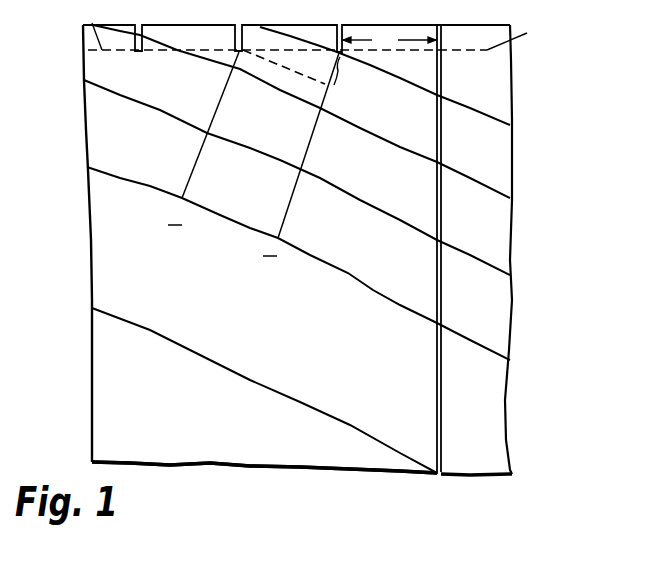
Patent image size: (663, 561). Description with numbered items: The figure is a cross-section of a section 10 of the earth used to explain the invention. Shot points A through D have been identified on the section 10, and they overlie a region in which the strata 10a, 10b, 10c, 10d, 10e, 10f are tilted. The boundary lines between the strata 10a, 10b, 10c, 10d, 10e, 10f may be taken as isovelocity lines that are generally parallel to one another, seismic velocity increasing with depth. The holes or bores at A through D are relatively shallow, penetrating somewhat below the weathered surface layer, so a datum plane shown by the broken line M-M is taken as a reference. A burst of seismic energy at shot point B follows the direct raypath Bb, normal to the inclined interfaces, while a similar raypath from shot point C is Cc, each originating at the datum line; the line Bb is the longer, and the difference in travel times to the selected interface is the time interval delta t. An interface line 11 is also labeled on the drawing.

The section of the earth 10 is at (200, 499).
The stratum 10a is at (520, 53).
The stratum 10b is at (520, 125).
The stratum 10c is at (77, 23).
The stratum 10d is at (77, 83).
The stratum 10e is at (77, 165).
The stratum 10f is at (77, 305).
The interface line between layers 11 is at (348, 273).